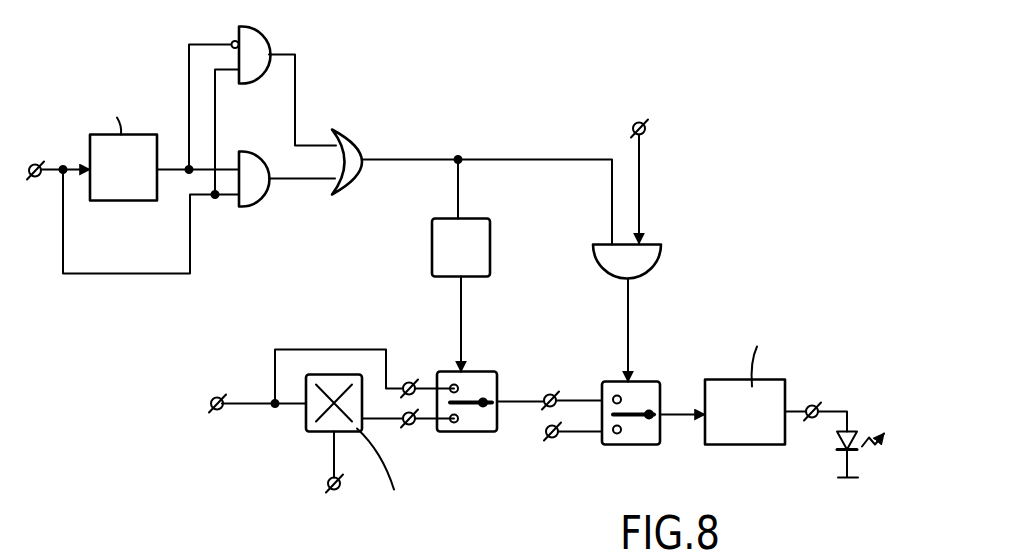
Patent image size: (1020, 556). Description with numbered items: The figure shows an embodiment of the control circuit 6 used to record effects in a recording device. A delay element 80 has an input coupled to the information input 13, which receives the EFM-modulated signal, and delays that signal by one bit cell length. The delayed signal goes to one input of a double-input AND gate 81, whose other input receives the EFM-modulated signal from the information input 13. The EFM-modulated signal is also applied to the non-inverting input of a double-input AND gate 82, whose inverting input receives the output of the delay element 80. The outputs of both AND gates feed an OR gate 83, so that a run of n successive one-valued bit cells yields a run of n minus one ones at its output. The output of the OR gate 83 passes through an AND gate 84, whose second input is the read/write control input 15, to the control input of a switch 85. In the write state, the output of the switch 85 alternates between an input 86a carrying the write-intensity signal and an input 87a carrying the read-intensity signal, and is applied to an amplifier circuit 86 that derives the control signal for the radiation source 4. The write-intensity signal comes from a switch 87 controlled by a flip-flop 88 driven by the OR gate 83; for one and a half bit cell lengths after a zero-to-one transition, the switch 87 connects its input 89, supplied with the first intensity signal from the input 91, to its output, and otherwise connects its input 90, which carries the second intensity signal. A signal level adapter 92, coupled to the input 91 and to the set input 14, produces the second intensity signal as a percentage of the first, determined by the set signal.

The control circuit 6 is at (698, 50).
The information input 13 is at (38, 151).
The delay element 80 is at (118, 200).
The AND gate 81 is at (252, 207).
The AND gate 82 is at (262, 37).
The OR gate 83 is at (352, 188).
The flip-flop 88 is at (490, 258).
The read/write control input 15 is at (644, 124).
The AND gate 84 is at (659, 262).
The input 91 is at (219, 408).
The signal level adapter 92 is at (312, 432).
The set input 14 is at (338, 488).
The input of switch 89 is at (404, 382).
The input of switch 90 is at (412, 424).
The switch 87 is at (465, 432).
The input 86a is at (553, 395).
The input 87a is at (552, 437).
The switch 85 is at (630, 445).
The amplifier circuit 86 is at (745, 445).
The radiation source 4 is at (856, 432).